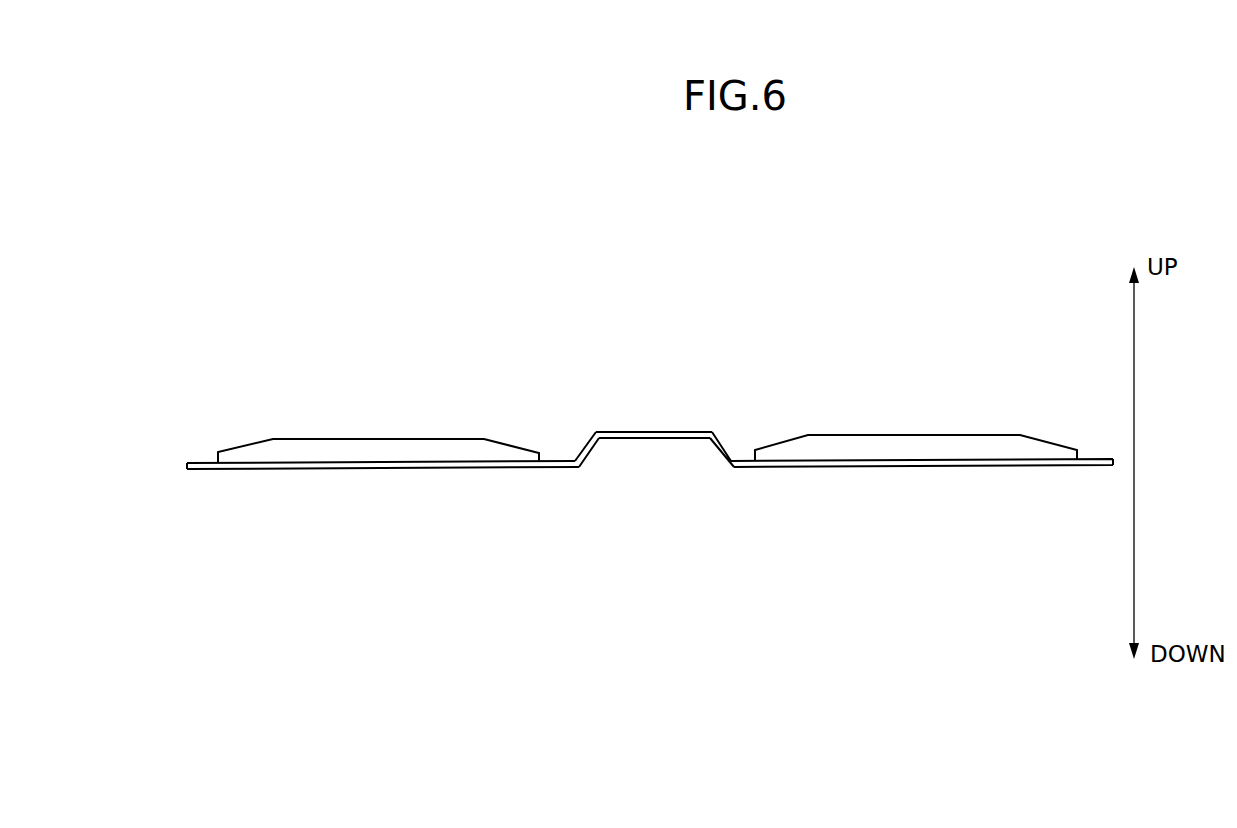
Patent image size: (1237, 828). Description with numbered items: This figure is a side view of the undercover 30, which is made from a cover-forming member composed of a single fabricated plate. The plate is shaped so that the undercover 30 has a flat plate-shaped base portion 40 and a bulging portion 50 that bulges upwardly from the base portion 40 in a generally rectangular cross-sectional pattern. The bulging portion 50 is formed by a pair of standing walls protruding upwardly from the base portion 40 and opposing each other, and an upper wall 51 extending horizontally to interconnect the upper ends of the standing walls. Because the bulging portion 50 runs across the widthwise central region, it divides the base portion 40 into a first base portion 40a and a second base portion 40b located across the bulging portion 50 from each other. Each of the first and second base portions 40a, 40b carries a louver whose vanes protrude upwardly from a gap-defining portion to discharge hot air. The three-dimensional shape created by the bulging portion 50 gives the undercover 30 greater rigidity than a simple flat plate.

The undercover 30 is at (903, 269).
The base portion 40 is at (650, 457).
The first base portion 40a is at (400, 470).
The second base portion 40b is at (832, 467).
The bulging portion 50 is at (613, 436).
The upper wall 51 is at (634, 437).